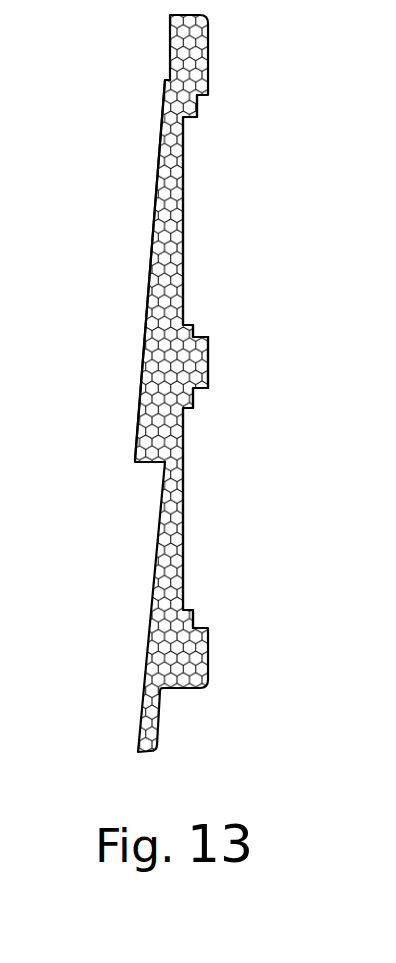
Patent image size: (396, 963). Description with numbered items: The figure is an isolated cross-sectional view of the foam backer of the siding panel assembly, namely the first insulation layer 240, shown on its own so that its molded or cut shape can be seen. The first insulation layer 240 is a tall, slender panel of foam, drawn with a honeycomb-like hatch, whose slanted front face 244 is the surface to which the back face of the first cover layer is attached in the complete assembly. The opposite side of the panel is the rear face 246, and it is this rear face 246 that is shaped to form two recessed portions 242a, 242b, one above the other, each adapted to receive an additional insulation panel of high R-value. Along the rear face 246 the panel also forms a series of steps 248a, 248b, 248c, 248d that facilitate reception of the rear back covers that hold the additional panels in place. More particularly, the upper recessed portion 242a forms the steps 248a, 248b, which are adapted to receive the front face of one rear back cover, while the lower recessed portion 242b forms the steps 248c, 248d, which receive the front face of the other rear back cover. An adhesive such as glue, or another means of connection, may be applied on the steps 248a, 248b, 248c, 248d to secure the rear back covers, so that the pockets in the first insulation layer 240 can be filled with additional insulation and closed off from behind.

The first insulation layer 240 is at (168, 363).
The recessed portion 242a is at (184, 205).
The recessed portion 242b is at (184, 518).
The front face 244 is at (150, 212).
The rear face 246 is at (208, 350).
The step 248a is at (198, 104).
The step 248b is at (195, 323).
The step 248c is at (193, 400).
The step 248d is at (194, 614).